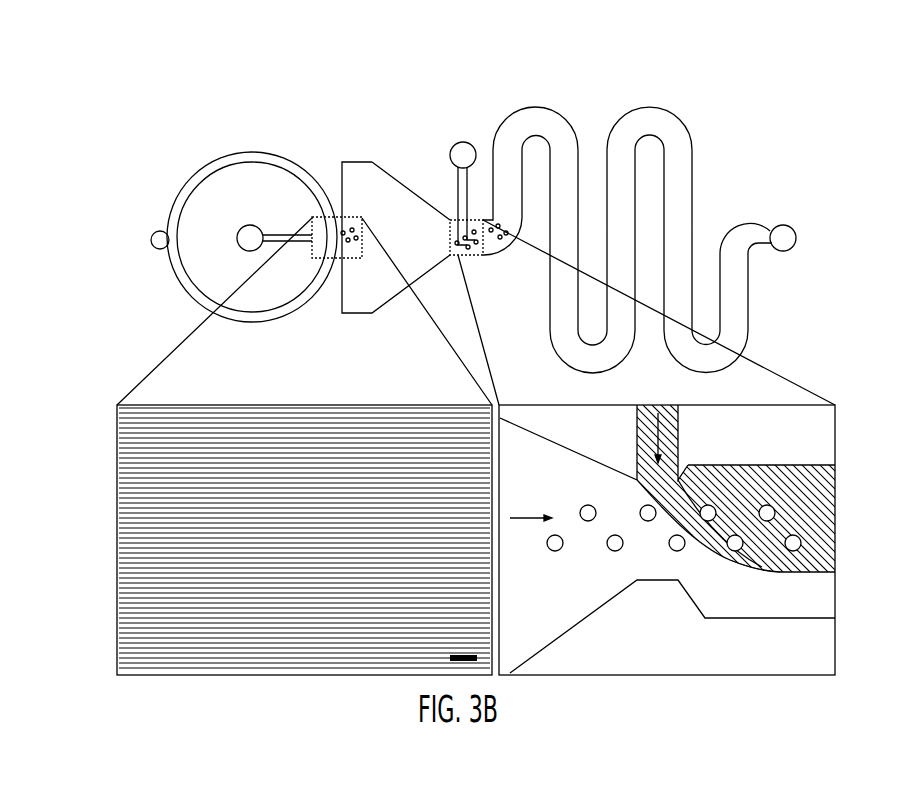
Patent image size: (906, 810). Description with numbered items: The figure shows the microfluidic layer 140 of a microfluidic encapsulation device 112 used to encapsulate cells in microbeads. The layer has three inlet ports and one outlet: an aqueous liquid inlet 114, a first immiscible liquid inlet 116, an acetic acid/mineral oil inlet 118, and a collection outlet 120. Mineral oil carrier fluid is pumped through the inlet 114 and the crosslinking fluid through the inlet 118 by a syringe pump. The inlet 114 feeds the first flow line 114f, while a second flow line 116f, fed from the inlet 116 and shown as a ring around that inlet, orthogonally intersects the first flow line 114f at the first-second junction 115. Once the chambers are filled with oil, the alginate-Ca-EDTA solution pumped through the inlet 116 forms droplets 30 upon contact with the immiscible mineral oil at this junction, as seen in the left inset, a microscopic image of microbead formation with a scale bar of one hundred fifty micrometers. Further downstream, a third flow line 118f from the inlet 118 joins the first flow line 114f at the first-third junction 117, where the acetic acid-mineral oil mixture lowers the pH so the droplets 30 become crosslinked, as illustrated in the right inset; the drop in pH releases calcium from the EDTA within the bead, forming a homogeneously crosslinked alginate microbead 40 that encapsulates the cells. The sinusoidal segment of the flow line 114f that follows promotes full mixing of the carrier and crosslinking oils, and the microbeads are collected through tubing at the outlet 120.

The microfluidic layer 140 is at (92, 84).
The microfluidic encapsulation device 112 is at (155, 290).
The aqueous liquid inlet 114 is at (250, 225).
The first flow line 114f is at (683, 175).
The first-second junction 115 is at (330, 291).
The first immiscible liquid inlet 116 is at (162, 232).
The second flow line 116f is at (258, 153).
The first-third junction 117 is at (492, 278).
The acetic acid/mineral oil inlet 118 is at (462, 142).
The third flow line 118f is at (460, 200).
The collection outlet 120 is at (775, 222).
The droplets 30 is at (557, 548).
The crosslinked alginate microbead 40 is at (792, 551).